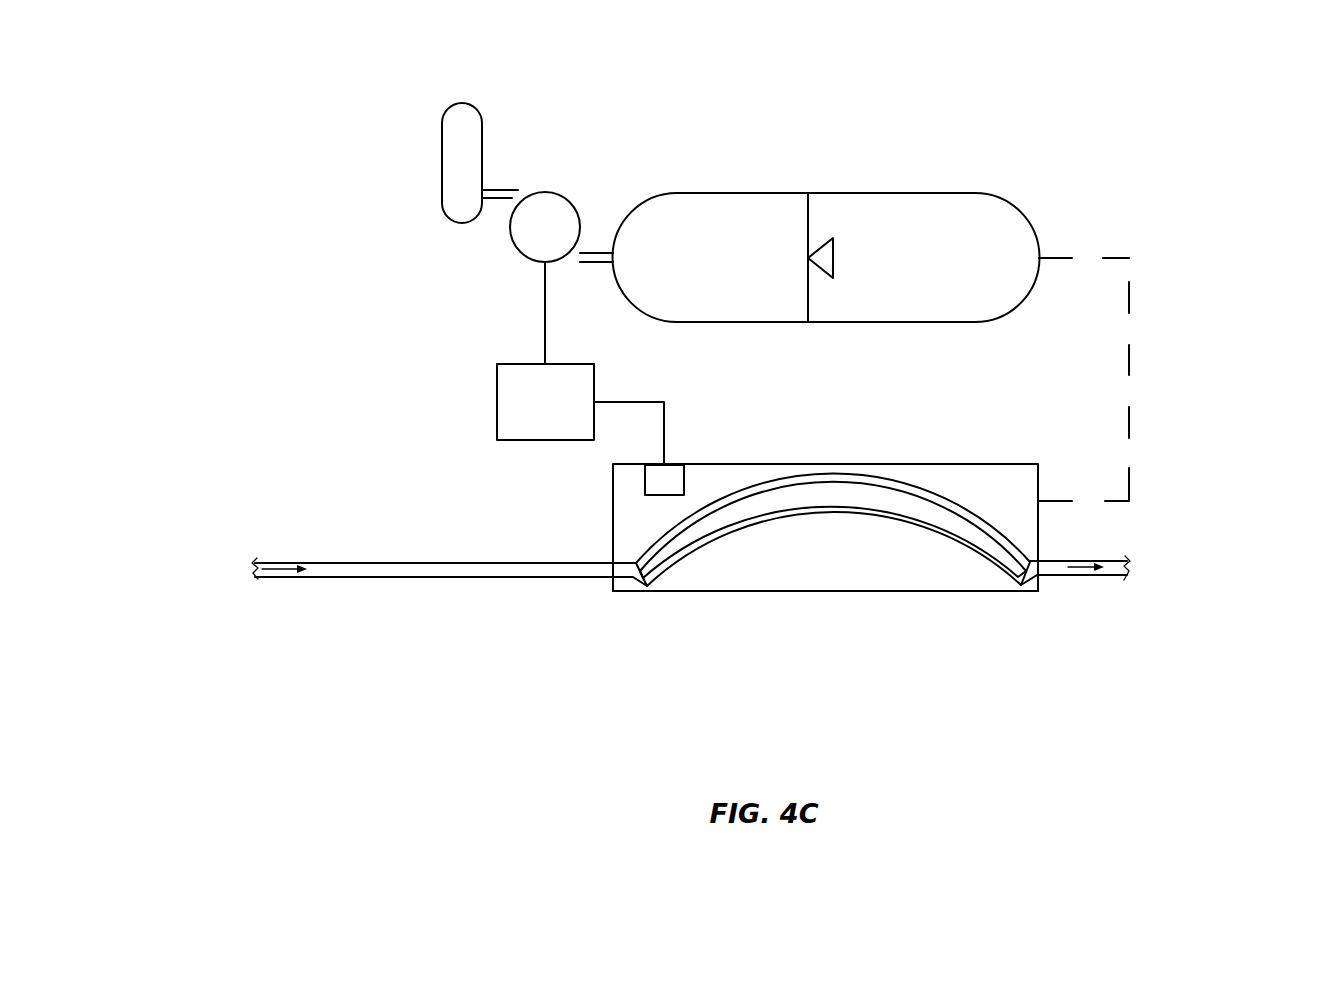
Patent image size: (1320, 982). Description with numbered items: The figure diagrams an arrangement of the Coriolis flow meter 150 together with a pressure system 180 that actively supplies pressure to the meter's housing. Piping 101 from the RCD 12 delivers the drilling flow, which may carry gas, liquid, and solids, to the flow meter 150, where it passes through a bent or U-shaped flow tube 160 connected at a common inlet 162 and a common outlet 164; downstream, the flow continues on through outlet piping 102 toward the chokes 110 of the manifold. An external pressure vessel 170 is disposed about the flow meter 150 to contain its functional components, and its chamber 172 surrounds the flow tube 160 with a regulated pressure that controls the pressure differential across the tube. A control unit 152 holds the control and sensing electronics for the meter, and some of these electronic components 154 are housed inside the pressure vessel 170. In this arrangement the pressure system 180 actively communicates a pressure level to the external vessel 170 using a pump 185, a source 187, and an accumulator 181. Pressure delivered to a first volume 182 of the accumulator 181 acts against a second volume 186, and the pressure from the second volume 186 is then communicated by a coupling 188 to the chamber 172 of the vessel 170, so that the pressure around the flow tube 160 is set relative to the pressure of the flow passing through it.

The Coriolis flow meter 150 is at (1243, 168).
The pressure system 180 is at (772, 149).
The accumulator 181 is at (945, 192).
The first volume 182 is at (692, 213).
The second volume 186 is at (863, 215).
The pump 185 is at (517, 249).
The source 187 is at (451, 103).
The coupling 188 is at (1112, 258).
The control unit 152 is at (572, 363).
The electronic components 154 is at (677, 463).
The external pressure vessel 170 is at (763, 592).
The flow tube 160 is at (887, 518).
The common inlet 162 is at (622, 577).
The common outlet 164 is at (1035, 592).
The chamber 172 is at (705, 576).
The piping 101 is at (285, 574).
The outlet pipe 102 is at (1088, 573).
The RCD 12 is at (194, 587).
The chokes 110 is at (1218, 587).